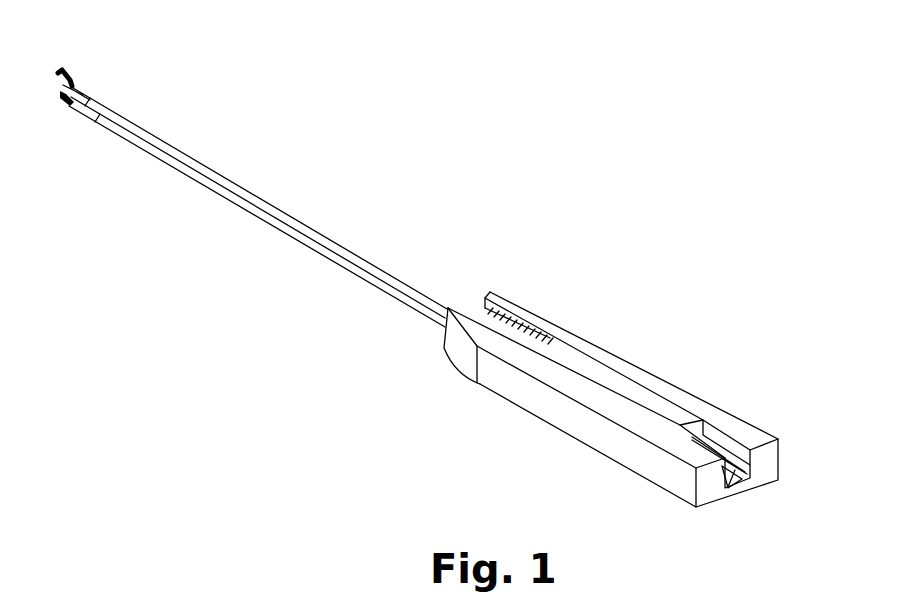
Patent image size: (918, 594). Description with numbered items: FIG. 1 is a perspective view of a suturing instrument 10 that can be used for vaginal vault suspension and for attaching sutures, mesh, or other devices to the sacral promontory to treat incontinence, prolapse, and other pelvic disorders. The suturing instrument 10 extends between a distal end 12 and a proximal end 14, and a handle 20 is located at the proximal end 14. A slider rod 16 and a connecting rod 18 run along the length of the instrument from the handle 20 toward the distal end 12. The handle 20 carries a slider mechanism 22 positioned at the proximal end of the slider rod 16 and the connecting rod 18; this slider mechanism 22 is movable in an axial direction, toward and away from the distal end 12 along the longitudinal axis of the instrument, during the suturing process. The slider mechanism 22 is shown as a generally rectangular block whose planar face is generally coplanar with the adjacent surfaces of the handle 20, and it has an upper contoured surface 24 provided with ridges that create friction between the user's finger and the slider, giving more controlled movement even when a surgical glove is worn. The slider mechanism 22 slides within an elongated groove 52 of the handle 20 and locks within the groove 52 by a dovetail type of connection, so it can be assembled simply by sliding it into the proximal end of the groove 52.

The suturing instrument 10 is at (402, 158).
The distal end 12 is at (50, 72).
The proximal end 14 is at (756, 505).
The slider rod 16 is at (231, 181).
The connecting rod 18 is at (303, 244).
The handle 20 is at (601, 350).
The slider mechanism 22 is at (563, 357).
The upper contoured surface 24 is at (513, 318).
The groove 52 is at (737, 478).